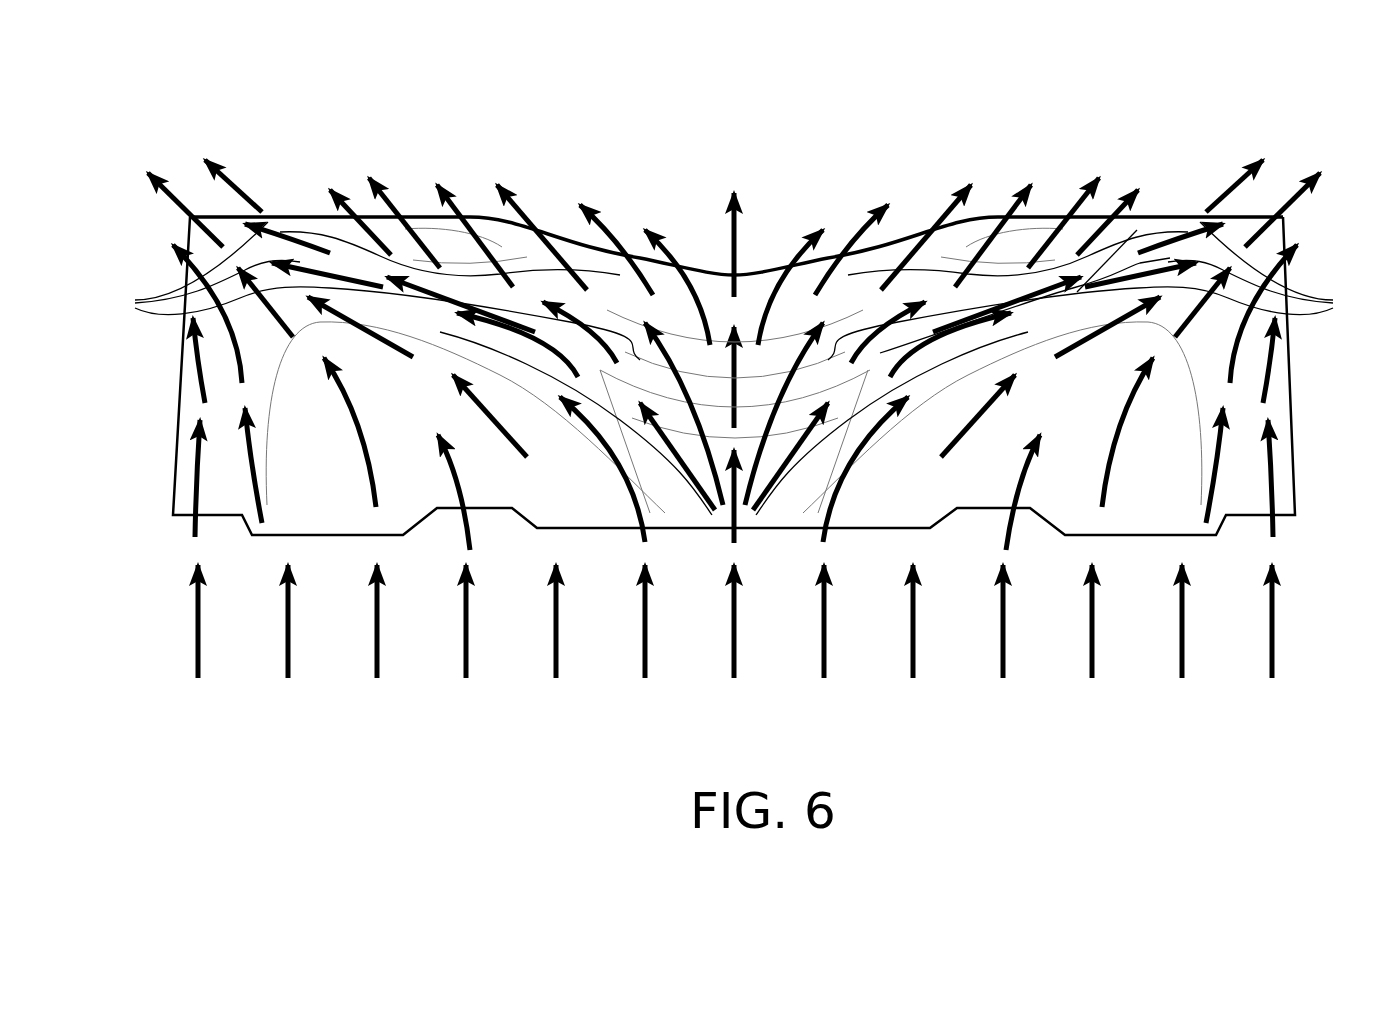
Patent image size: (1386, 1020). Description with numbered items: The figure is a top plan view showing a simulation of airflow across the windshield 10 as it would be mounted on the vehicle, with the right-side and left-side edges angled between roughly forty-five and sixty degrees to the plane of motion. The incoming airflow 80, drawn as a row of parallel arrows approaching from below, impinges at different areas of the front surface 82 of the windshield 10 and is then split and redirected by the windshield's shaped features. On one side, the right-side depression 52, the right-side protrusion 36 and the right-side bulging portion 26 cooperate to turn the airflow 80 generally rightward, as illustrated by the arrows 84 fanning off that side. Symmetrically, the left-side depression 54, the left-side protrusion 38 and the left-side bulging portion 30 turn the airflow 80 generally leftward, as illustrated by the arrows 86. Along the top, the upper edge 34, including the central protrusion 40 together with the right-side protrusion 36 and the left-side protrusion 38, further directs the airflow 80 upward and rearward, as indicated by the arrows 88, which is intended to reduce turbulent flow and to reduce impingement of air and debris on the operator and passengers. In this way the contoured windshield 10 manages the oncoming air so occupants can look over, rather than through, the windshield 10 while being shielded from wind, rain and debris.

The windshield 10 is at (155, 539).
The right-side bulging portion 26 is at (392, 457).
The left-side bulging portion 30 is at (1007, 447).
The upper edge 34 is at (907, 236).
The right-side protrusion 36 is at (498, 232).
The left-side protrusion 38 is at (1060, 236).
The central protrusion 40 is at (752, 298).
The right-side depression 52 is at (537, 333).
The left-side depression 54 is at (1125, 236).
The incoming airflow 80 is at (1095, 645).
The front surface 82 is at (342, 364).
The arrows 84 is at (214, 269).
The arrows 86 is at (1254, 269).
The arrows 88 is at (492, 234).